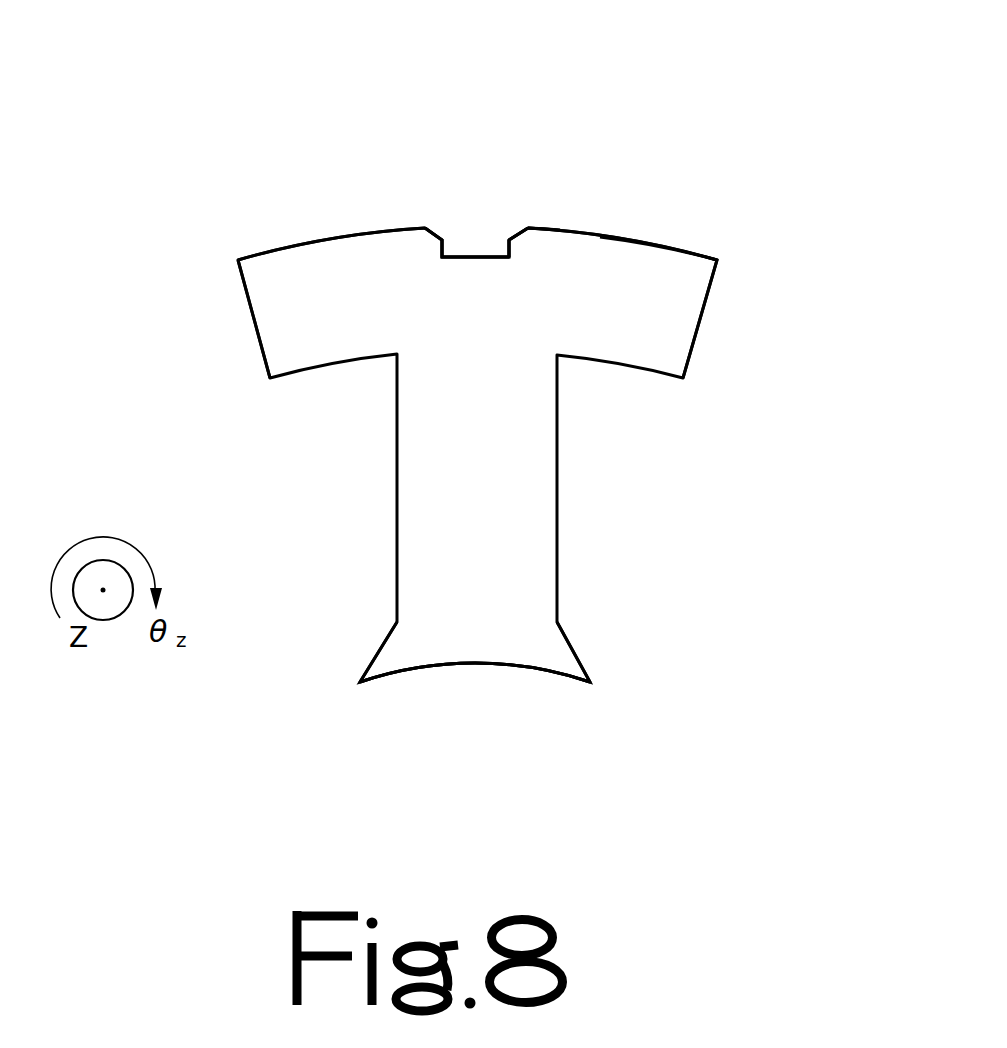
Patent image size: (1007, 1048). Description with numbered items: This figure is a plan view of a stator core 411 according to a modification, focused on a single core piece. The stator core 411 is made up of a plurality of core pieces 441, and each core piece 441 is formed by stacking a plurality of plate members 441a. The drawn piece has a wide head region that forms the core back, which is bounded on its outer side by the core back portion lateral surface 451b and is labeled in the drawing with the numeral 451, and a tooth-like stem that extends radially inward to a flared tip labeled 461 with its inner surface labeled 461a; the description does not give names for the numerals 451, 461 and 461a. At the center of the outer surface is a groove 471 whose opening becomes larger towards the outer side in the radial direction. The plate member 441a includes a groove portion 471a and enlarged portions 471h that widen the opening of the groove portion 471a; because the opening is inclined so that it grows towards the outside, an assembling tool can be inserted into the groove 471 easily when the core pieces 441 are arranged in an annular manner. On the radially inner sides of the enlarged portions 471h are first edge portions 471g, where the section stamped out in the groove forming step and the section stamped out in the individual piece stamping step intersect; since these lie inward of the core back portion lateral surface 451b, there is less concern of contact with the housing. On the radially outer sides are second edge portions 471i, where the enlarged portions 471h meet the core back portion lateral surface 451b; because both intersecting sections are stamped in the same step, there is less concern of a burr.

The stator core 411 is at (733, 135).
The core piece 441 is at (614, 228).
The plate member 441a is at (667, 270).
The head portion 451 is at (295, 258).
The core back portion lateral surface 451b is at (262, 253).
The tooth tip portion 461 is at (525, 657).
The inner surface of tooth tip portion 461a is at (525, 755).
The groove 471 is at (457, 194).
The groove portion 471a is at (295, 75).
The first edge portion 471g is at (507, 244).
The enlarged portion 471h is at (515, 239).
The second edge portion 471i is at (530, 228).